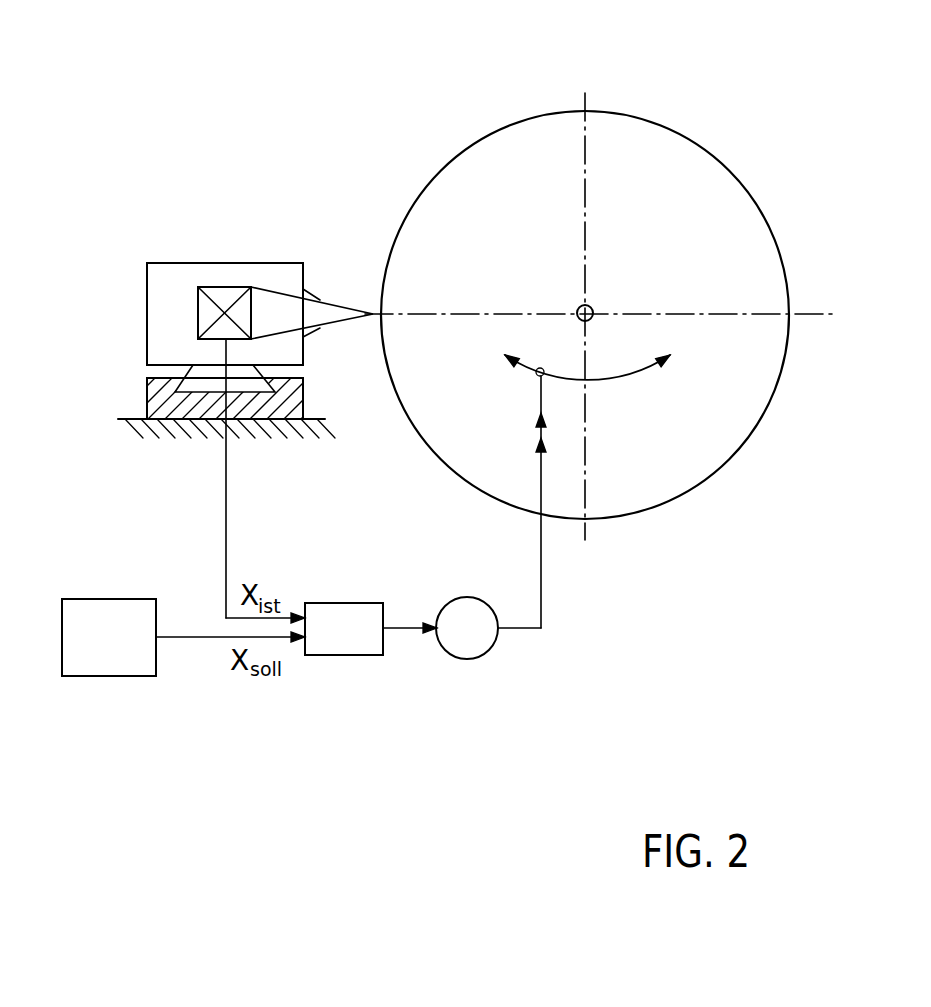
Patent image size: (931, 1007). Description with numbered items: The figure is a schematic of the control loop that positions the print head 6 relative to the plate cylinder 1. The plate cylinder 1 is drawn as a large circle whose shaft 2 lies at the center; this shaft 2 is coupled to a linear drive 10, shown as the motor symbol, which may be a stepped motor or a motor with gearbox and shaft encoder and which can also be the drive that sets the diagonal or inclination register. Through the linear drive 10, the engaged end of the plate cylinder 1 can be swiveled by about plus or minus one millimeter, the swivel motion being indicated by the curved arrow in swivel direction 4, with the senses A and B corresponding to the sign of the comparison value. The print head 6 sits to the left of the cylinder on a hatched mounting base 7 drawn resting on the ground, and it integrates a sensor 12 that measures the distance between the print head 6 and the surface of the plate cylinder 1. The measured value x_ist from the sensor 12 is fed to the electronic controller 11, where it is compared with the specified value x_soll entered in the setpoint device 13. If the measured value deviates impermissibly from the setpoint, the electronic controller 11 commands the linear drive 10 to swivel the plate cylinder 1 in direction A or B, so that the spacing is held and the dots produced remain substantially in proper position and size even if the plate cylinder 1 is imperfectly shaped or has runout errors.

The plate cylinder 1 is at (679, 501).
The shaft 2 is at (593, 306).
The swivel direction 4 is at (622, 377).
The print head 6 is at (172, 273).
The base guide 7 is at (188, 400).
The linear drive 10 is at (455, 660).
The electronic controller 11 is at (337, 655).
The sensor 12 is at (224, 292).
The setpoint device 13 is at (98, 668).